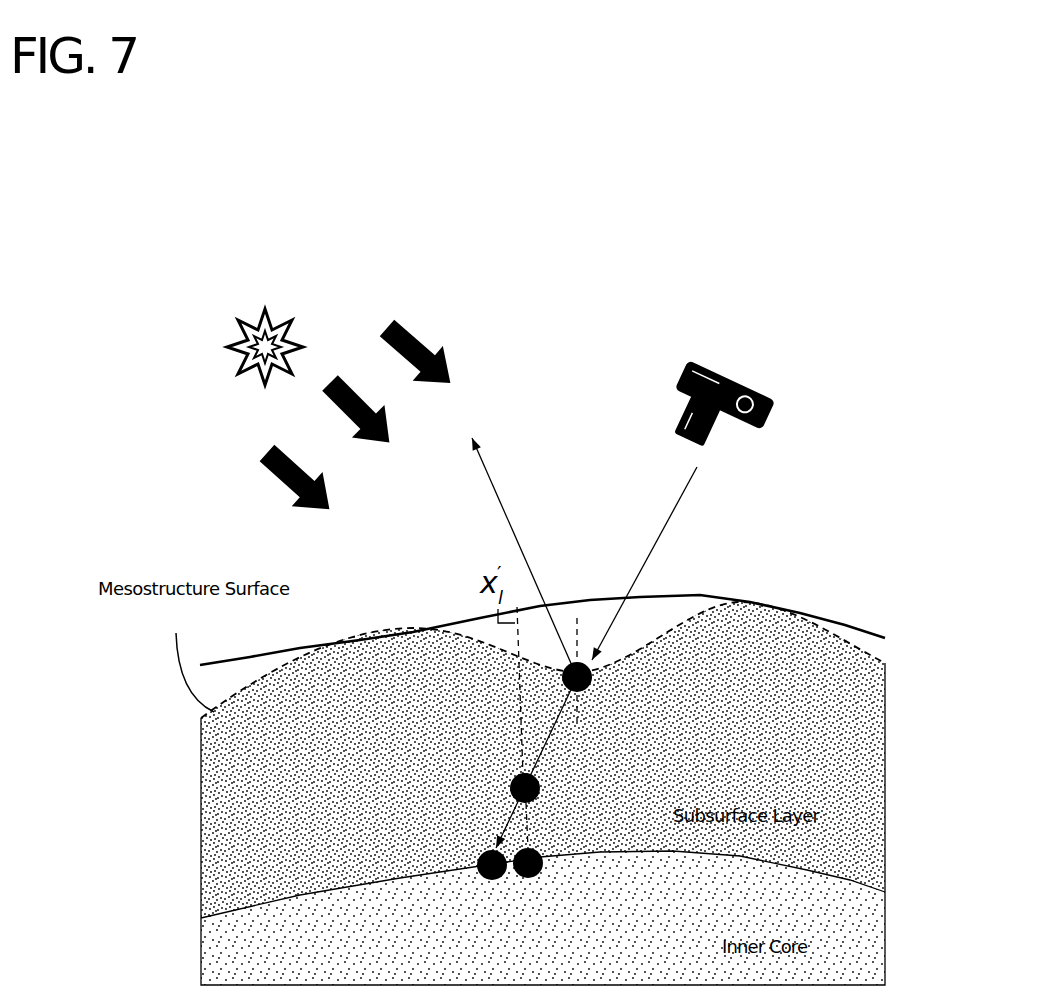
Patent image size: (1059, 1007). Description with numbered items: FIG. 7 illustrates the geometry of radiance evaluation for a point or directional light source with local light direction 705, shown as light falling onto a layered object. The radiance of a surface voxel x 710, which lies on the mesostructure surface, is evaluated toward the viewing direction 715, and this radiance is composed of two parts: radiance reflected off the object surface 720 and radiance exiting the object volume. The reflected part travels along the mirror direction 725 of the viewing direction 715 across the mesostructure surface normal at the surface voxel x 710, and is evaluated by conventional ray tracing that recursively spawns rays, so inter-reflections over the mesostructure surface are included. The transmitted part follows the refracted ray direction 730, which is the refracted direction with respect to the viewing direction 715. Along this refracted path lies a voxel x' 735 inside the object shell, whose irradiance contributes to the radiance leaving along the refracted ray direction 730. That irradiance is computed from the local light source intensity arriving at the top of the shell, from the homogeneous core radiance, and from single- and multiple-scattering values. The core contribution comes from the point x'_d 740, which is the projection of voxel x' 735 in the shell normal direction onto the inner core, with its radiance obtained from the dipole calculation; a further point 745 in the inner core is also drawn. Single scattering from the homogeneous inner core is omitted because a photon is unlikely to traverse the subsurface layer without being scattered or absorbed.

The local light direction ω_l 705 is at (356, 392).
The surface voxel x 710 is at (608, 682).
The viewing direction ω 715 is at (683, 510).
The object surface 720 is at (547, 594).
The reflected light direction 725 is at (524, 550).
The refracted ray direction ω_t 730 is at (564, 762).
The voxel x' 735 is at (499, 780).
The point x'_d 740 is at (548, 876).
The inner core exit point x0 745 is at (478, 883).